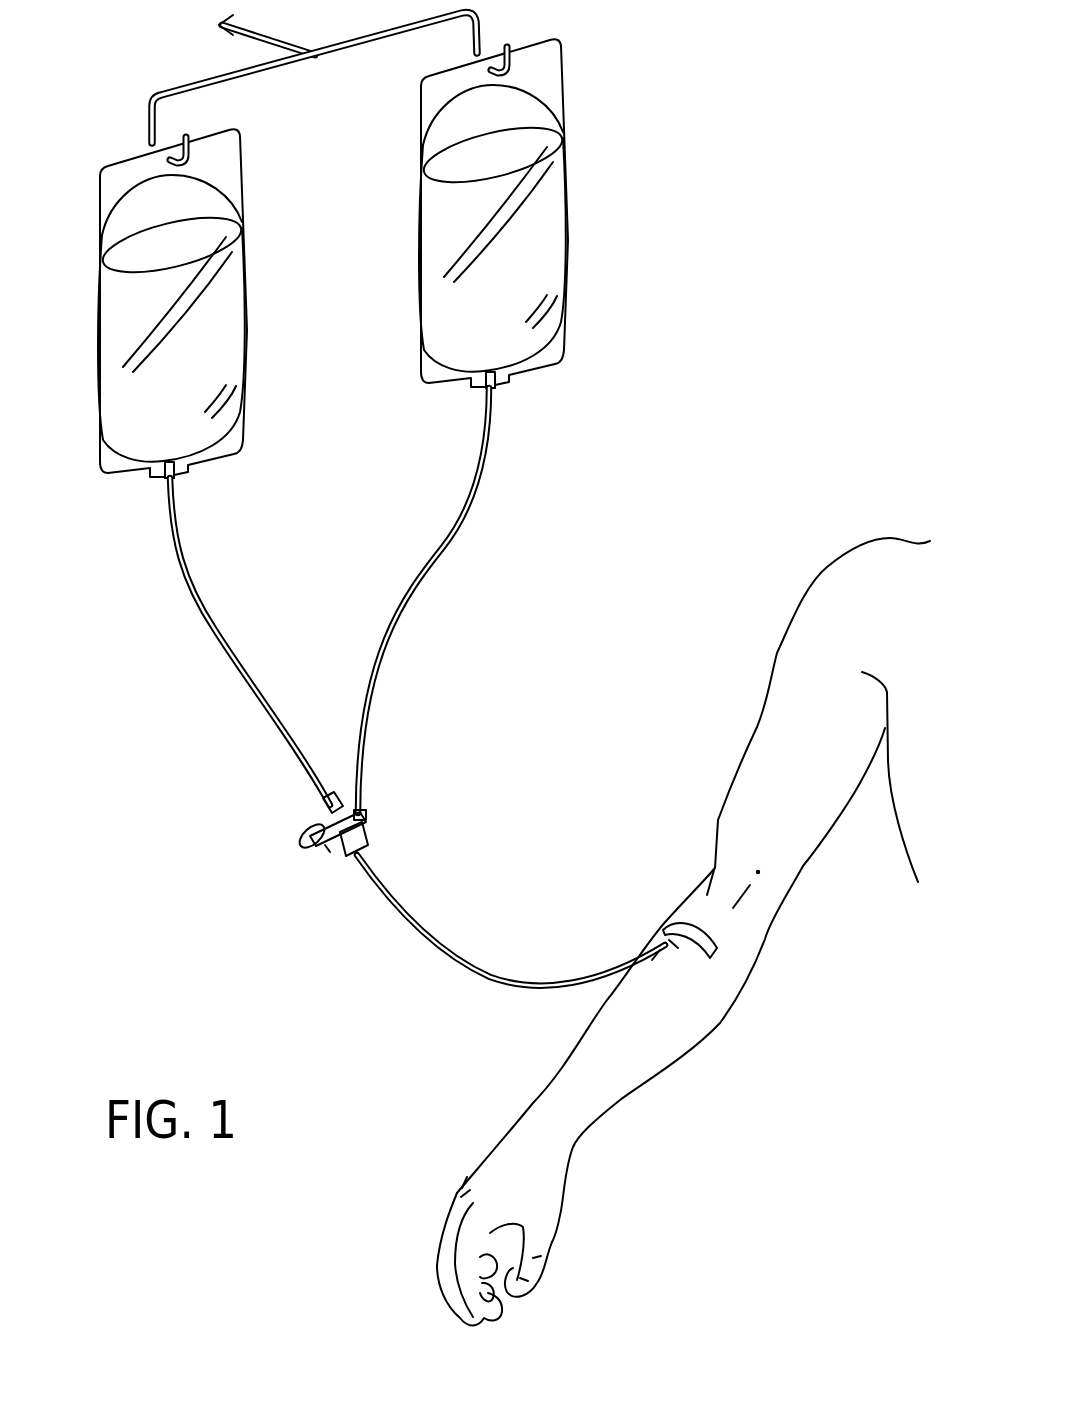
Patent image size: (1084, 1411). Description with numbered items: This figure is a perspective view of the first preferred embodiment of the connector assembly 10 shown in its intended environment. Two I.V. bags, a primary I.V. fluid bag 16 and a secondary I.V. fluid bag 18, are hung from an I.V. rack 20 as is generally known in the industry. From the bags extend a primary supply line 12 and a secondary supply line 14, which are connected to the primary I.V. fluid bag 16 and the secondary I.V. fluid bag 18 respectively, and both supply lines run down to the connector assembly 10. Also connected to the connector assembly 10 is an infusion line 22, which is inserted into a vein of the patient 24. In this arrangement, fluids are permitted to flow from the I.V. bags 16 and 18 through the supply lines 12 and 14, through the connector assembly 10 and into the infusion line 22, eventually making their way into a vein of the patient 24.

The connector assembly 10 is at (293, 853).
The primary supply line 12 is at (490, 478).
The secondary supply line 14 is at (233, 667).
The primary I.V. fluid bag 16 is at (545, 245).
The secondary I.V. fluid bag 18 is at (220, 385).
The I.V. rack 20 is at (281, 66).
The infusion line 22 is at (393, 897).
The patient 24 is at (650, 1007).